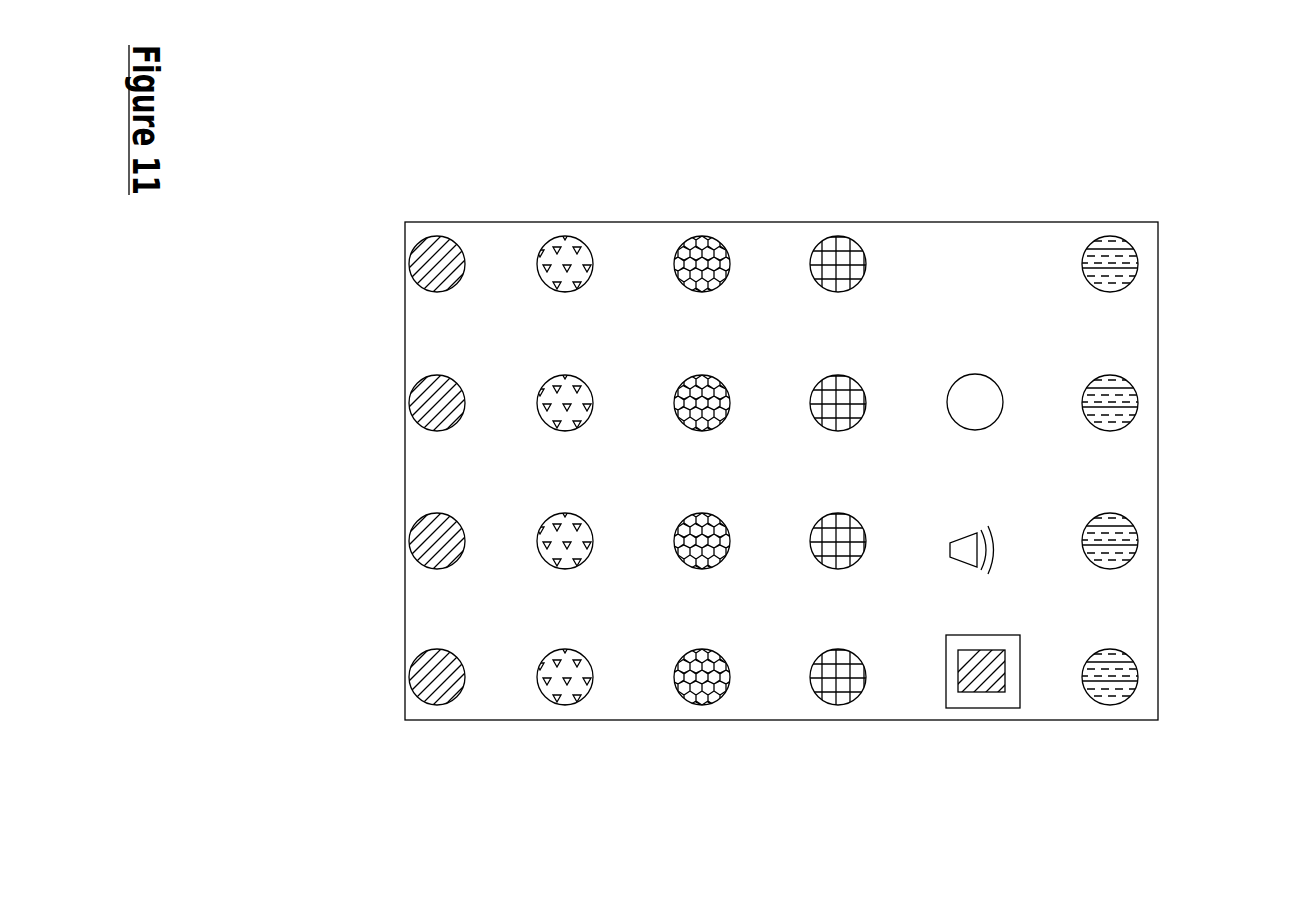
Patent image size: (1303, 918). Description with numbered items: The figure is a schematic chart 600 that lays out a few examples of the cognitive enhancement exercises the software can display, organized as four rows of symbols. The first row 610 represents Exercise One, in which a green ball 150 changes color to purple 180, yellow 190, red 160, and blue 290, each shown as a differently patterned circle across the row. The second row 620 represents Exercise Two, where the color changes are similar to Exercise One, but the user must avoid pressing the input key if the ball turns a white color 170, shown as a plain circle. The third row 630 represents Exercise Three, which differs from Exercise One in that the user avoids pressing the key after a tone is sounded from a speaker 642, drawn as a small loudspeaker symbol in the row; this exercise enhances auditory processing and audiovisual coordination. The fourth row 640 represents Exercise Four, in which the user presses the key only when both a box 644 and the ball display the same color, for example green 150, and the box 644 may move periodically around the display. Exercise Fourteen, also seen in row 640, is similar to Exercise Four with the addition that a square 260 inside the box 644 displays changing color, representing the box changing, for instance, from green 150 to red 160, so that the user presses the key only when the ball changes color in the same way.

The green 150 is at (1075, 752).
The purple 180 is at (566, 407).
The yellow 190 is at (702, 412).
The red 160 is at (852, 406).
The white color 170 is at (970, 383).
The blue 290 is at (1103, 405).
The schematic chart 600 is at (1193, 292).
The row 610 is at (300, 264).
The row 620 is at (312, 408).
The row 630 is at (306, 544).
The row 640 is at (306, 664).
The speaker 642 is at (993, 535).
The box 644 is at (946, 675).
The square 260 is at (967, 695).